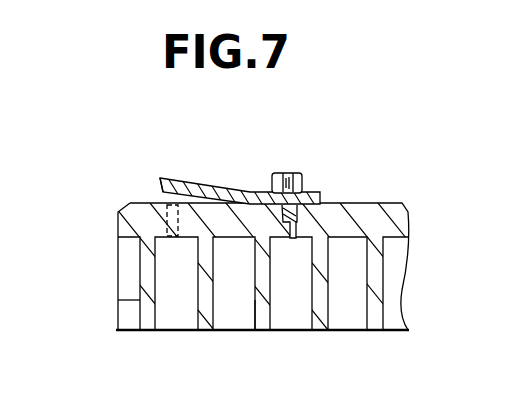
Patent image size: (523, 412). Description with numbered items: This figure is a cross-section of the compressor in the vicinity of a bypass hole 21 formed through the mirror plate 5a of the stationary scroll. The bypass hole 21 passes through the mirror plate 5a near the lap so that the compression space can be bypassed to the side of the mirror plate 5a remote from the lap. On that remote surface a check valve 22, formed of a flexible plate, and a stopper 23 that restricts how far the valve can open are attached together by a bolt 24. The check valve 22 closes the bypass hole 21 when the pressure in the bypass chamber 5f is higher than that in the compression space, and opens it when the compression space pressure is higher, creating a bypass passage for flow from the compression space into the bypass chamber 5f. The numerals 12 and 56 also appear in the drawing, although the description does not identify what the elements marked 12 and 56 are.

The mirror plate 5a is at (386, 203).
The bypass chamber 5f is at (293, 143).
The slot wall 12 is at (163, 303).
The bypass hole 21 is at (166, 246).
The check valve 22 is at (156, 204).
The stopper 23 is at (185, 181).
The bolt 24 is at (303, 174).
The partition wall 56 is at (257, 311).